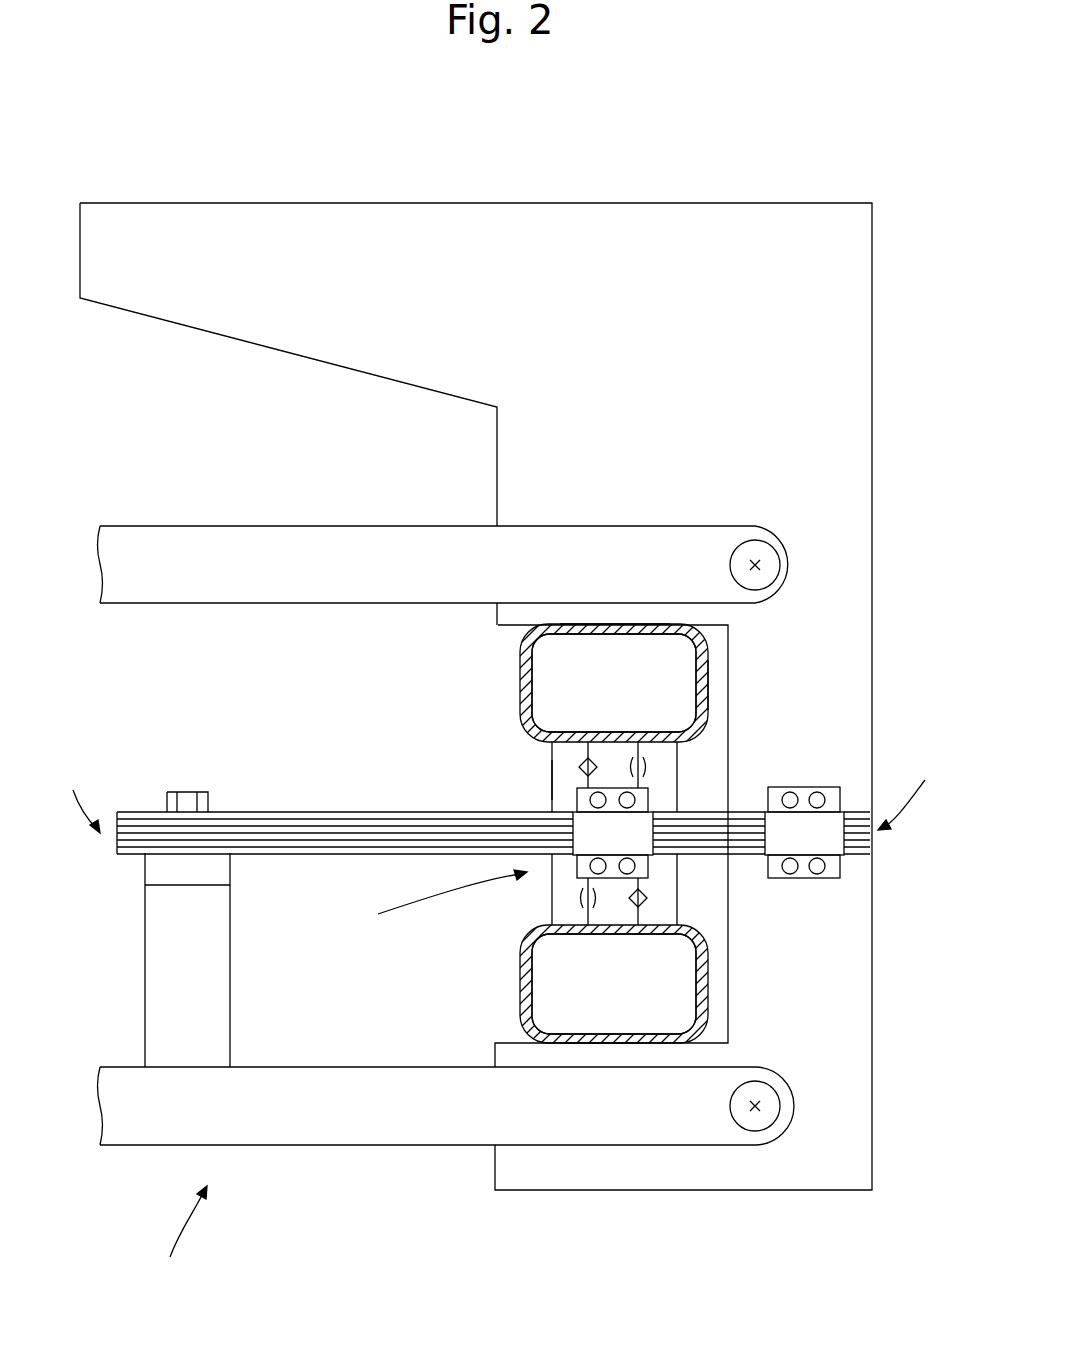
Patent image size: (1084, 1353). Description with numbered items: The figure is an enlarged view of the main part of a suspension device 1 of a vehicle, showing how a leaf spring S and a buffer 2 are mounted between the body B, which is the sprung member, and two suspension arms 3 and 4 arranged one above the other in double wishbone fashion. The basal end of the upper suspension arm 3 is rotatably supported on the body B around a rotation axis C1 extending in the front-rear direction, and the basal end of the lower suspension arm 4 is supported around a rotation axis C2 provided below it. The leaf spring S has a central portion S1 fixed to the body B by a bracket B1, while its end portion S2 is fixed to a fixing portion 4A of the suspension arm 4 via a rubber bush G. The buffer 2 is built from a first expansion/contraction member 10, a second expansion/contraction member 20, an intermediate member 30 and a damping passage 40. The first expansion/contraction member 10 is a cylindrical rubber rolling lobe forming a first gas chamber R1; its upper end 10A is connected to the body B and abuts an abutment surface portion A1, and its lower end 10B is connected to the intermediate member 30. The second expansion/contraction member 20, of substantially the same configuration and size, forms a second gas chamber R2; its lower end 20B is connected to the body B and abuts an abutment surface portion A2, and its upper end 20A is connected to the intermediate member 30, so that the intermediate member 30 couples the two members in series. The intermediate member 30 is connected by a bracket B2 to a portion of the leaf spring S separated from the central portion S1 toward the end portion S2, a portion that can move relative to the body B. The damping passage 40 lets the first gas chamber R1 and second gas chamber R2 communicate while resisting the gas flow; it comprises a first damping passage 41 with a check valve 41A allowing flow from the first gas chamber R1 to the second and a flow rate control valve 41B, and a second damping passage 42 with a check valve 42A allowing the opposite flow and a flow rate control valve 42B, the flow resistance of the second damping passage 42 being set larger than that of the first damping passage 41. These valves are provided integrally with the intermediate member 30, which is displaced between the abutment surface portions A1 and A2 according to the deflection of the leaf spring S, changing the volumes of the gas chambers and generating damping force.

The suspension device 1 is at (168, 1286).
The buffer 2 is at (443, 902).
The suspension arm 3 is at (192, 540).
The suspension arm 4 is at (335, 1122).
The fixing portion 4A is at (158, 1005).
The first expansion/contraction member 10 is at (518, 680).
The upper end 10A is at (582, 623).
The lower end 10B is at (690, 750).
The second expansion/contraction member 20 is at (713, 987).
The upper end 20A is at (552, 915).
The lower end 20B is at (593, 1043).
The intermediate member 30 is at (665, 902).
The damping passage 40 is at (658, 1025).
The first damping passage 41 is at (638, 925).
The check valve 41A is at (647, 893).
The flow rate control valve 41B is at (645, 767).
The second damping passage 42 is at (588, 925).
The check valve 42A is at (578, 772).
The flow rate control valve 42B is at (578, 898).
The abutment surface portion A1 is at (520, 640).
The abutment surface portion A2 is at (517, 1040).
The body B is at (811, 325).
The bracket B1 is at (823, 845).
The bracket B2 is at (580, 837).
The rotation axis C1 is at (755, 565).
The rotation axis C2 is at (757, 1110).
The rubber bush G is at (160, 870).
The leaf spring S is at (322, 822).
The central portion S1 is at (907, 790).
The end portion S2 is at (78, 794).
The first gas chamber R1 is at (608, 691).
The second gas chamber R2 is at (608, 986).